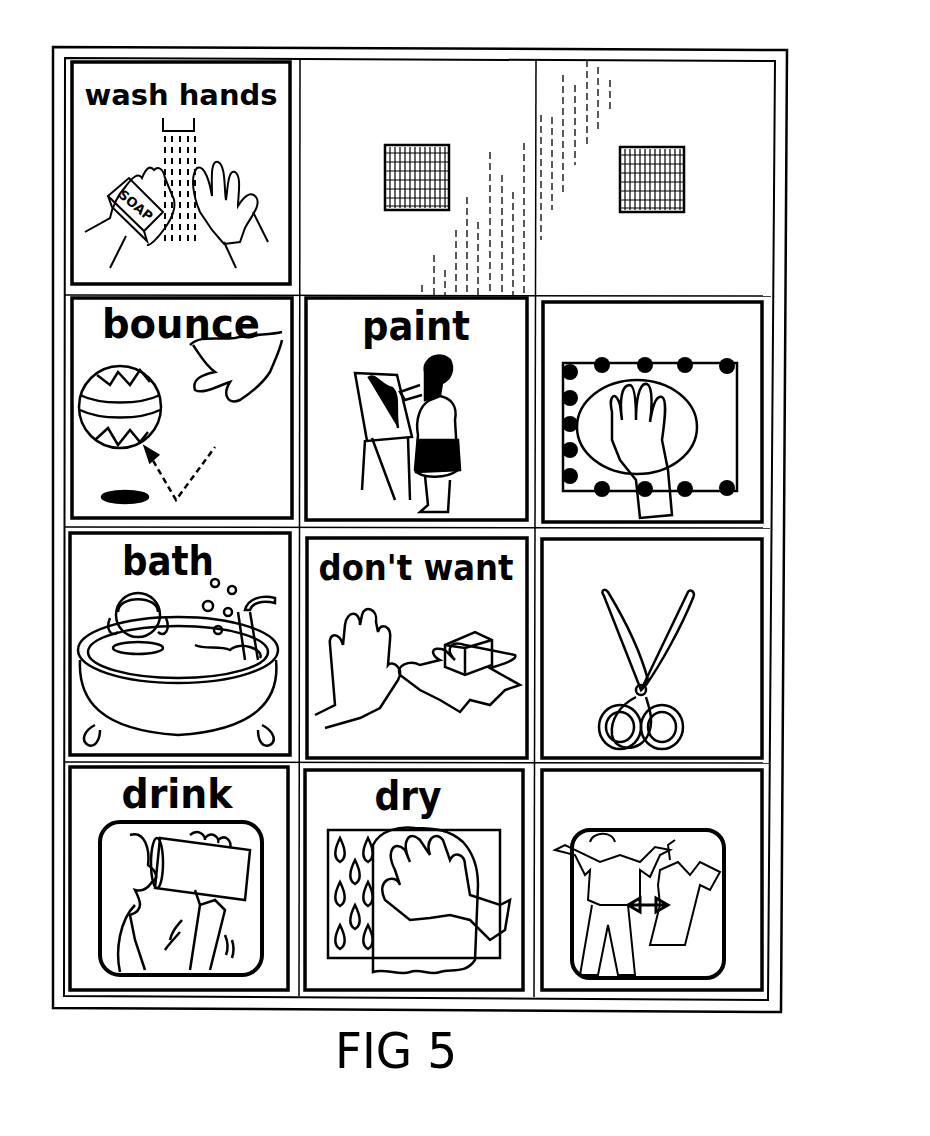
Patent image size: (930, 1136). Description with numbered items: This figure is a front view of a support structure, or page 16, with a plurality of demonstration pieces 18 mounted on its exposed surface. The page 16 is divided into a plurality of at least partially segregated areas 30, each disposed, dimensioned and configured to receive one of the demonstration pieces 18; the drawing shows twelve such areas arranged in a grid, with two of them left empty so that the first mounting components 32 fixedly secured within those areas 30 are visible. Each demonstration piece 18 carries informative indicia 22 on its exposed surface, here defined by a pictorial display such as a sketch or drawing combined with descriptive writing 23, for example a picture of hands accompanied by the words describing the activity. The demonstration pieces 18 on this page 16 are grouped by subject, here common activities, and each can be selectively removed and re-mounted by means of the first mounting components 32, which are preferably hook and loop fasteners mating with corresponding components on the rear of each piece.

The page 16 is at (788, 173).
The demonstration piece 18 is at (746, 416).
The informative indicia 22 is at (571, 355).
The descriptive writing 23 is at (695, 572).
The segregated area 30 is at (358, 78).
The first mounting component 32 is at (427, 150).